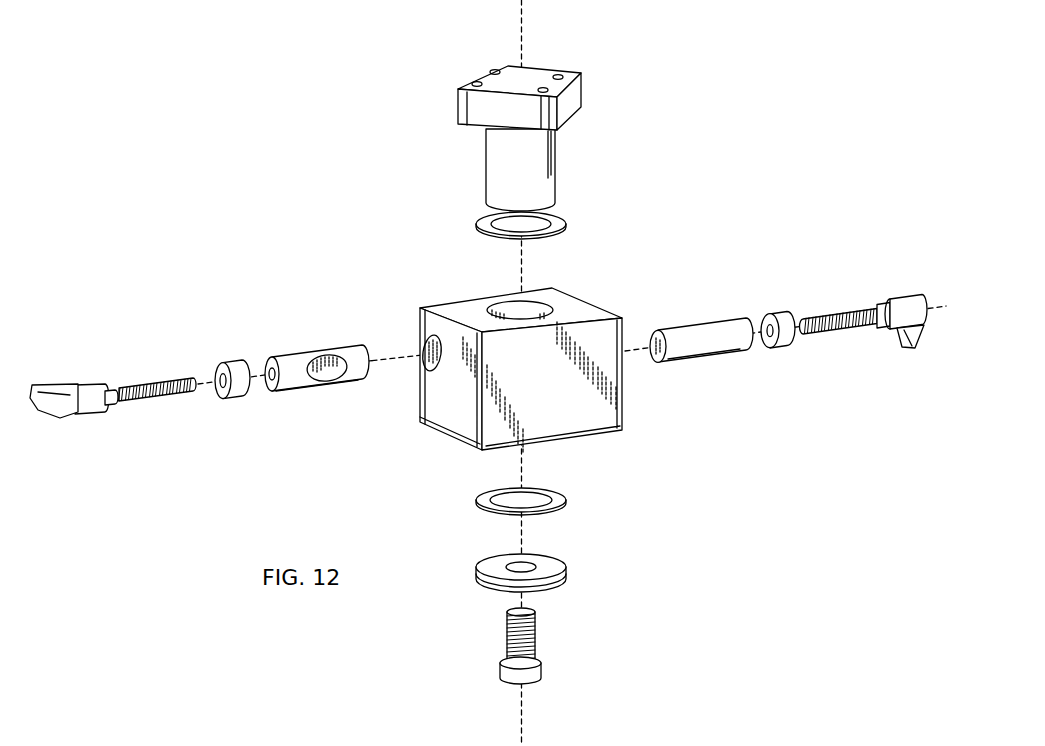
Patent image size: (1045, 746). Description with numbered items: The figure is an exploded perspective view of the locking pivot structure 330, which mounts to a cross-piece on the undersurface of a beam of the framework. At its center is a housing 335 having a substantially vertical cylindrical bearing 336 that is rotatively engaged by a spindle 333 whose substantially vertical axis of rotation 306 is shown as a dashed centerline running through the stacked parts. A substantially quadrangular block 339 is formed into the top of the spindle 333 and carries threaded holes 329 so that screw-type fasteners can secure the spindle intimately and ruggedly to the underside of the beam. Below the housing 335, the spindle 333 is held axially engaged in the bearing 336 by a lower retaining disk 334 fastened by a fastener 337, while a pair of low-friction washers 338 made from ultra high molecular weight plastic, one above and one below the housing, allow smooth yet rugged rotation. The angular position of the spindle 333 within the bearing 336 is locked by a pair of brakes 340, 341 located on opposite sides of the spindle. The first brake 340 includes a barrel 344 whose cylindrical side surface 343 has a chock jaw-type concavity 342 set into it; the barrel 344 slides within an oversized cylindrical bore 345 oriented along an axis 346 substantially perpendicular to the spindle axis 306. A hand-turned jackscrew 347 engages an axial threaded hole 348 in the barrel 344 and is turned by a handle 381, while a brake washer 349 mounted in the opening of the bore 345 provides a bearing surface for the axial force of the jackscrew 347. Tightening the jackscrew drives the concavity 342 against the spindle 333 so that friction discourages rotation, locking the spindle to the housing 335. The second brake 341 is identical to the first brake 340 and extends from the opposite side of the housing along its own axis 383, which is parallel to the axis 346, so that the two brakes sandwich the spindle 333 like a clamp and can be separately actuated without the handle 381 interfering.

The axis of rotation 306 is at (523, 17).
The threaded holes 329 is at (495, 72).
The locking pivot structure 330 is at (280, 148).
The spindle 333 is at (552, 167).
The lower retaining disk 334 is at (563, 575).
The housing 335 is at (467, 305).
The cylindrical bearing 336 is at (542, 305).
The fastener 337 is at (537, 640).
The low-friction washers 338 is at (480, 222).
The quadrangular block 339 is at (577, 97).
The first brake 340 is at (184, 440).
The second brake 341 is at (880, 270).
The concavity 342 is at (323, 380).
The cylindrical side surface 343 is at (298, 387).
The barrel 344 is at (300, 362).
The cylindrical bore 345 is at (425, 368).
The axis 346 is at (392, 357).
The jackscrew 347 is at (158, 383).
The axial threaded hole 348 is at (275, 368).
The brake washer 349 is at (233, 362).
The handle 381 is at (92, 387).
The axis 383 is at (642, 347).